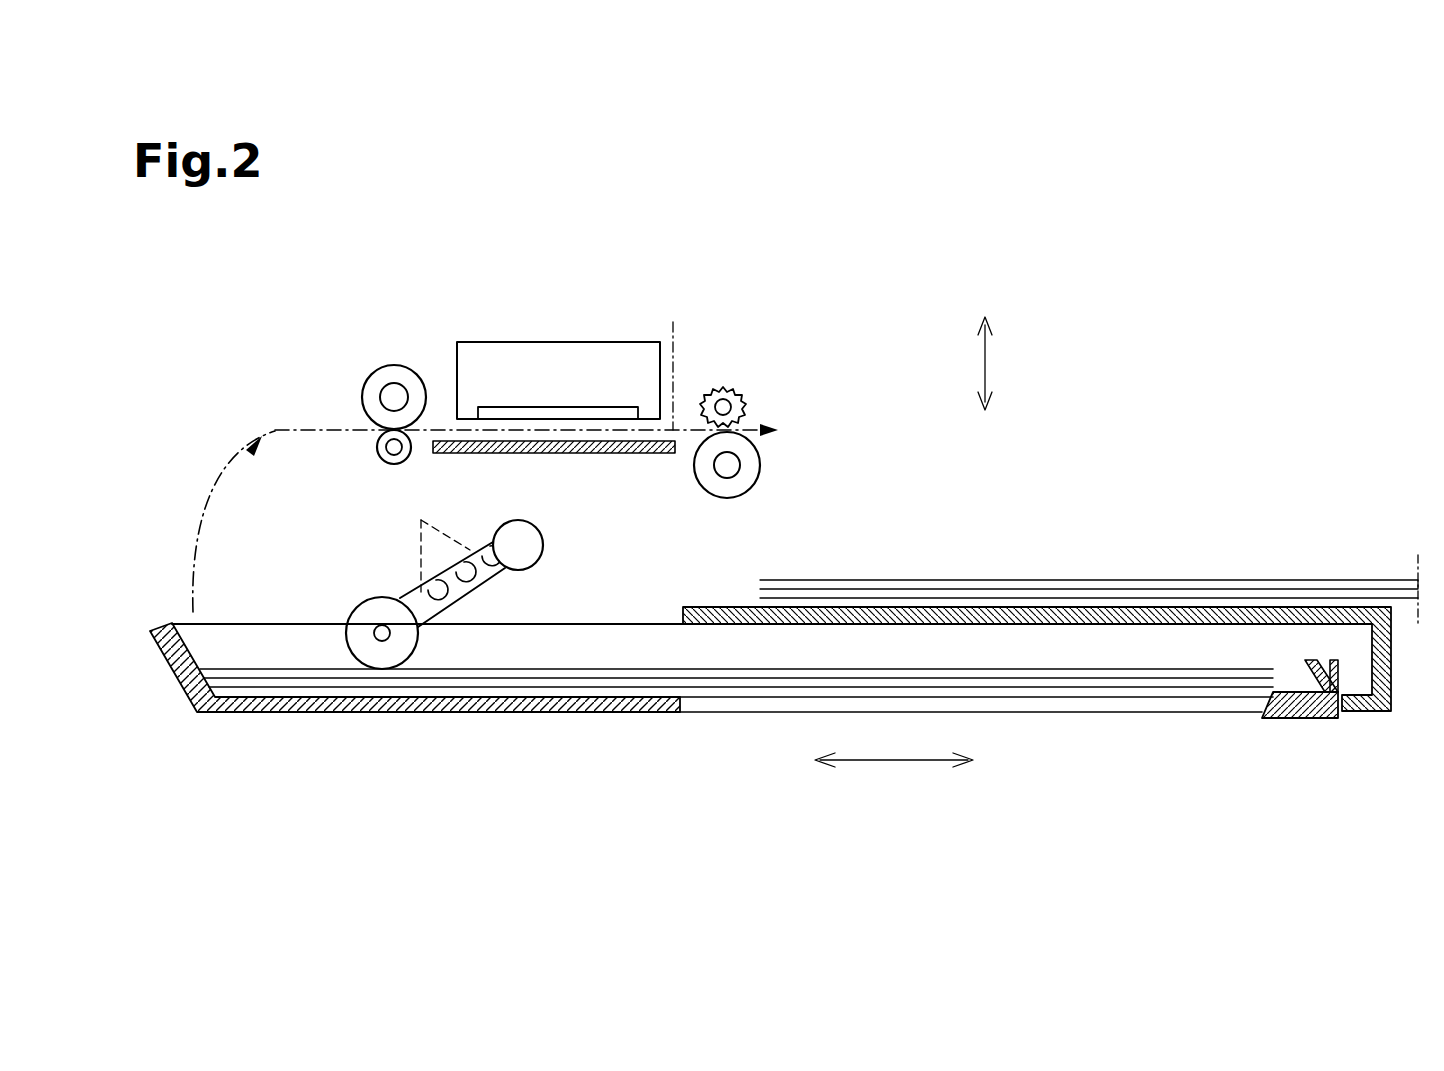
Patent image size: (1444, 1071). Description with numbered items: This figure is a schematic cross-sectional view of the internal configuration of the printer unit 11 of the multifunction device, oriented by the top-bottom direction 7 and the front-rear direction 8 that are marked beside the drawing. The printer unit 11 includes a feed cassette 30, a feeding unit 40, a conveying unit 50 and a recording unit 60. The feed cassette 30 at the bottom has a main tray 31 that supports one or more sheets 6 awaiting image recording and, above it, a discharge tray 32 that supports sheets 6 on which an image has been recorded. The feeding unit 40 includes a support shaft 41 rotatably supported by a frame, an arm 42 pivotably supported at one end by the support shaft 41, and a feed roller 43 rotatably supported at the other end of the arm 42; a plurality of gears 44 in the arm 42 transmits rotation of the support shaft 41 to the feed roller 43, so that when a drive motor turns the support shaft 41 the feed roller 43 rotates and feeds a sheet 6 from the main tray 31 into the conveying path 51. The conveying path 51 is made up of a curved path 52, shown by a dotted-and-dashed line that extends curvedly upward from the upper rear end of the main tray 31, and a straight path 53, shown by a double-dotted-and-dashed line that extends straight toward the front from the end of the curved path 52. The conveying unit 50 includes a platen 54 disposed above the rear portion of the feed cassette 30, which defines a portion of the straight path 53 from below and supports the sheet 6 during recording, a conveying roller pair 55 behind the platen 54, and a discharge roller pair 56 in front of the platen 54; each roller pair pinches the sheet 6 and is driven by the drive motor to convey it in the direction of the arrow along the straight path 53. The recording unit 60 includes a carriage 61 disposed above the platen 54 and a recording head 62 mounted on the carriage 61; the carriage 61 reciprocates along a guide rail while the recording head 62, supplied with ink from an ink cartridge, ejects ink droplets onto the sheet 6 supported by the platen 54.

The printer unit 11 is at (897, 250).
The top-bottom direction 7 is at (986, 362).
The front-rear direction 8 is at (888, 762).
The conveying unit 50 is at (212, 393).
The conveying path 51 is at (275, 422).
The curved path 52 is at (205, 495).
The straight path 53 is at (674, 361).
The conveying roller pair 55 is at (354, 384).
The platen 54 is at (556, 455).
The discharge roller pair 56 is at (757, 393).
The recording unit 60 is at (608, 300).
The carriage 61 is at (524, 342).
The recording head 62 is at (557, 407).
The feeding unit 40 is at (560, 520).
The support shaft 41 is at (543, 548).
The arm 42 is at (481, 590).
The feed roller 43 is at (405, 668).
The gears 44 is at (433, 540).
The feed cassette 30 is at (1260, 527).
The main tray 31 is at (328, 713).
The discharge tray 32 is at (1208, 607).
The sheet 6 is at (1070, 578).